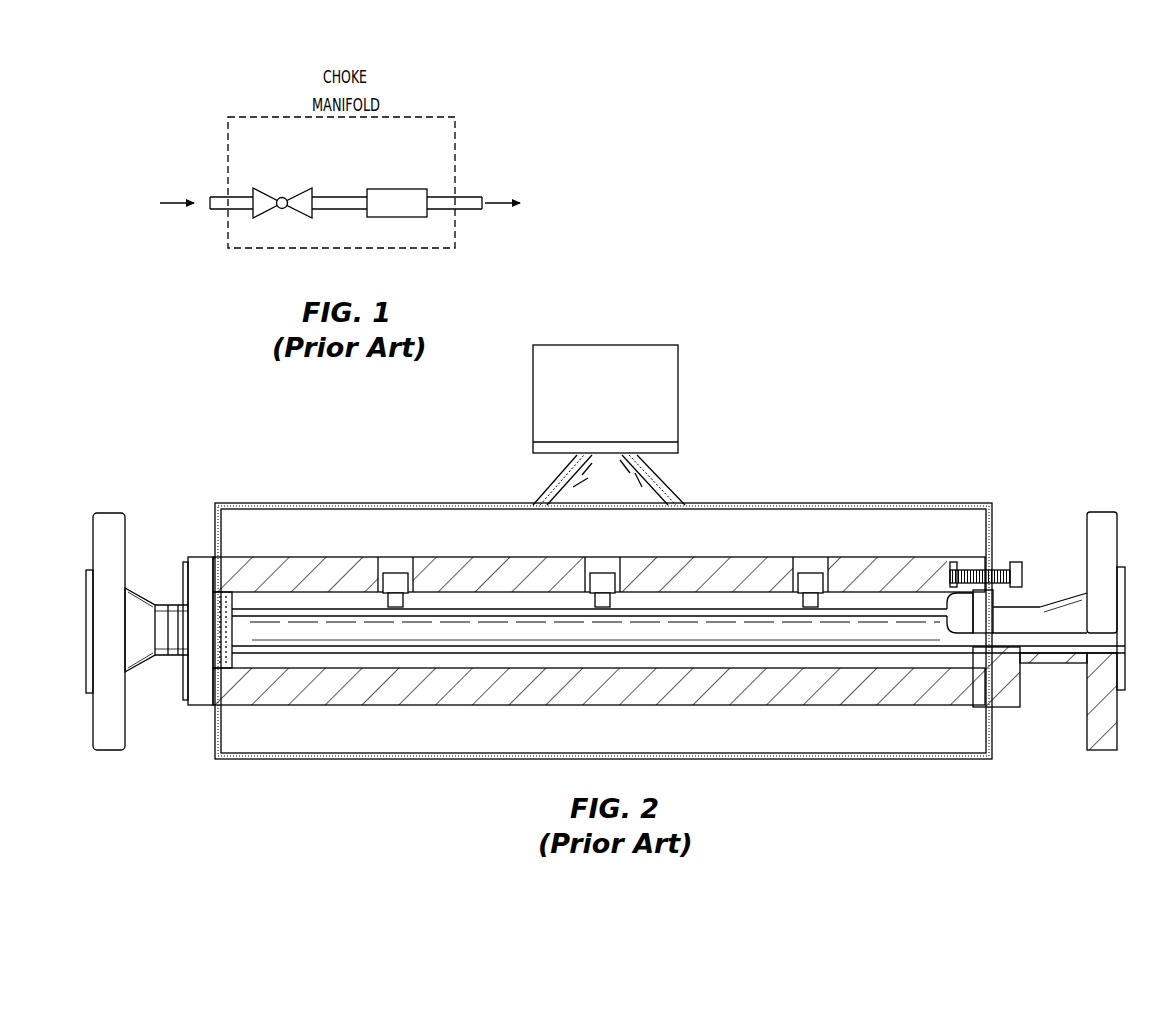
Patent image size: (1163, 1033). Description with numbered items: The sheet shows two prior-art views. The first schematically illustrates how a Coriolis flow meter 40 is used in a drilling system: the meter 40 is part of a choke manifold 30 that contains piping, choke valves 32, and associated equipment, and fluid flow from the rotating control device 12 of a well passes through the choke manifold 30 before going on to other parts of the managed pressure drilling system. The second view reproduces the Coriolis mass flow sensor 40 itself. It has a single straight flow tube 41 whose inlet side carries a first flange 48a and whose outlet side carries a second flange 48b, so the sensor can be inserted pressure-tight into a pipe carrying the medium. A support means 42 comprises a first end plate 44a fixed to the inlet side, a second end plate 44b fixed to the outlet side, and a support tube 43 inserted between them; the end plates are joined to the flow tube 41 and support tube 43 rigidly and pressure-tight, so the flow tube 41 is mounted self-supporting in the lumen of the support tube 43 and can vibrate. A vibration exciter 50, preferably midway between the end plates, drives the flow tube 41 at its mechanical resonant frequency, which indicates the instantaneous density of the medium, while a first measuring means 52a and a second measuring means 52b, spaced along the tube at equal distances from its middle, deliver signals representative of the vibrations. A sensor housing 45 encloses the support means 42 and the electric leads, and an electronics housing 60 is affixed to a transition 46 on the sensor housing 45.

In FIG. 1, the rotating control device 12 is at (158, 224).
In FIG. 1, the choke manifold 30 is at (526, 116).
In FIG. 1, the choke valves 32 is at (254, 219).
In FIG. 1, the Coriolis flow meter 40 is at (427, 218).
In FIG. 2, the Coriolis flow meter 40 is at (809, 427).
In FIG. 2, the flow tube 41 is at (331, 613).
In FIG. 2, the support means 42 is at (700, 556).
In FIG. 2, the support tube 43 is at (440, 577).
In FIG. 2, the first end plate 44a is at (223, 600).
In FIG. 2, the second end plate 44b is at (987, 600).
In FIG. 2, the sensor housing 45 is at (290, 760).
In FIG. 2, the transition 46 is at (656, 478).
In FIG. 2, the first flange 48a is at (115, 528).
In FIG. 2, the second flange 48b is at (1104, 525).
In FIG. 2, the vibration exciter 50 is at (610, 571).
In FIG. 2, the first measuring means 52a is at (399, 569).
In FIG. 2, the second measuring means 52b is at (817, 571).
In FIG. 2, the electronics housing 60 is at (625, 360).